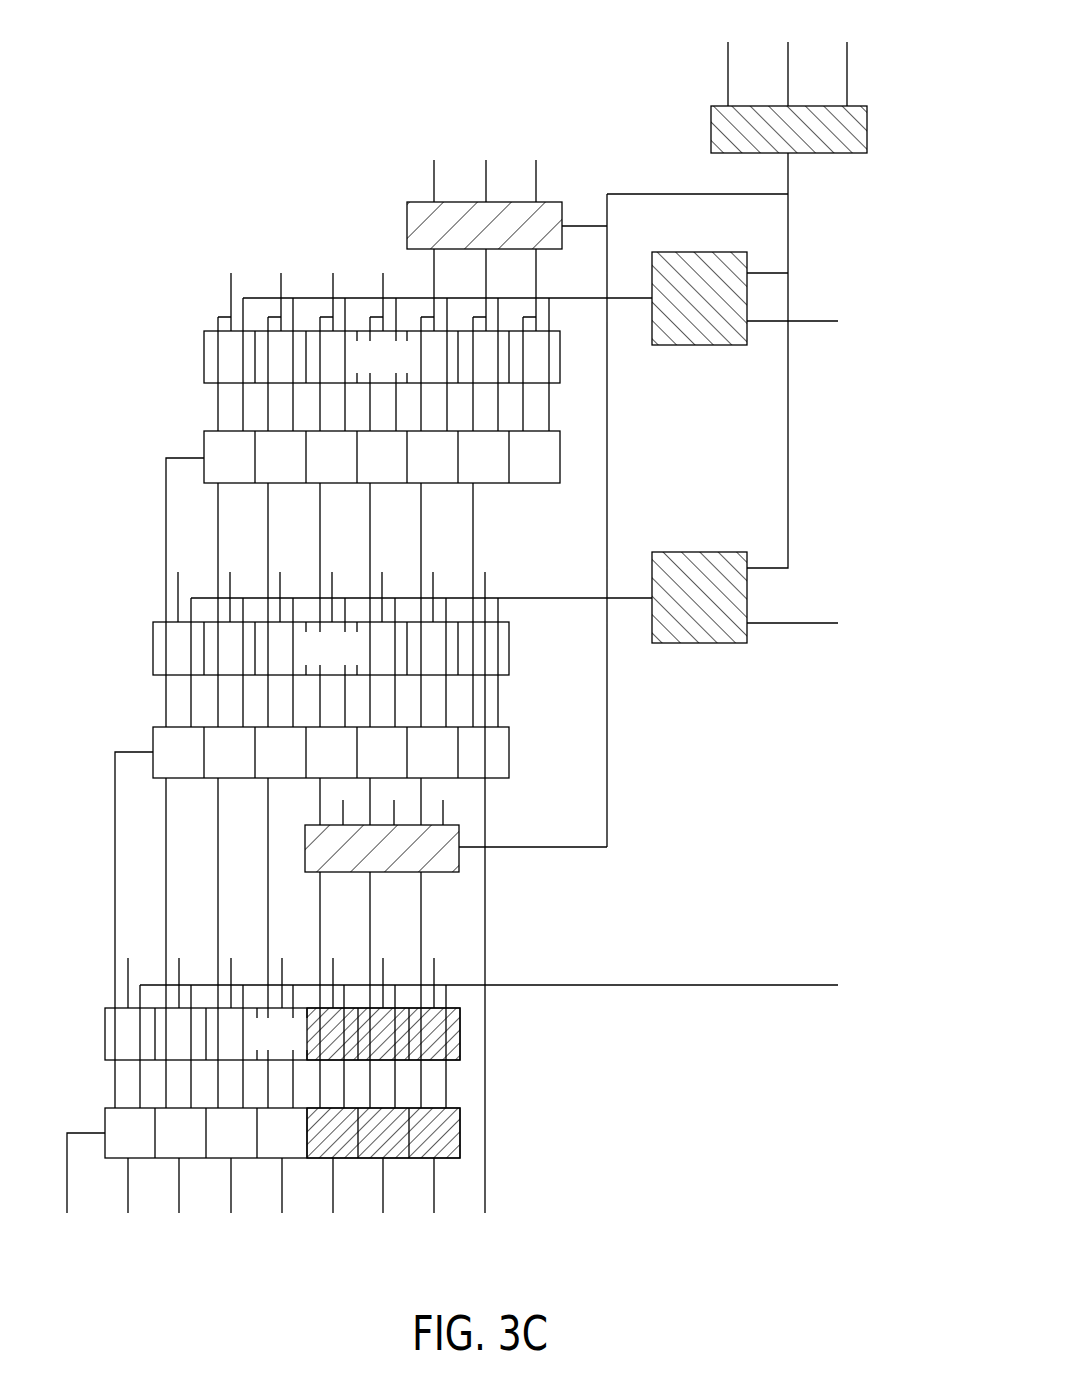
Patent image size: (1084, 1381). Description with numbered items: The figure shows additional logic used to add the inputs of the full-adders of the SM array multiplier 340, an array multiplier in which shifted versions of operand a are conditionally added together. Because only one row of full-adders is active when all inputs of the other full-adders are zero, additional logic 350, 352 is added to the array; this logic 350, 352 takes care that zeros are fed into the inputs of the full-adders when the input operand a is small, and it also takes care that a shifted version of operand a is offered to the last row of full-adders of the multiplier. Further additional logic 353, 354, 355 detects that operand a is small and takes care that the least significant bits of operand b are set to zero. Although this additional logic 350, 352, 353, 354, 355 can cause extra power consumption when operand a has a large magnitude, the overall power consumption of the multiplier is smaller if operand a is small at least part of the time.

The SM array multiplier 340 is at (524, 78).
The additional logic 350 is at (407, 224).
The additional logic 352 is at (459, 867).
The further additional logic 353 is at (867, 119).
The further additional logic 354 is at (699, 345).
The further additional logic 355 is at (717, 552).